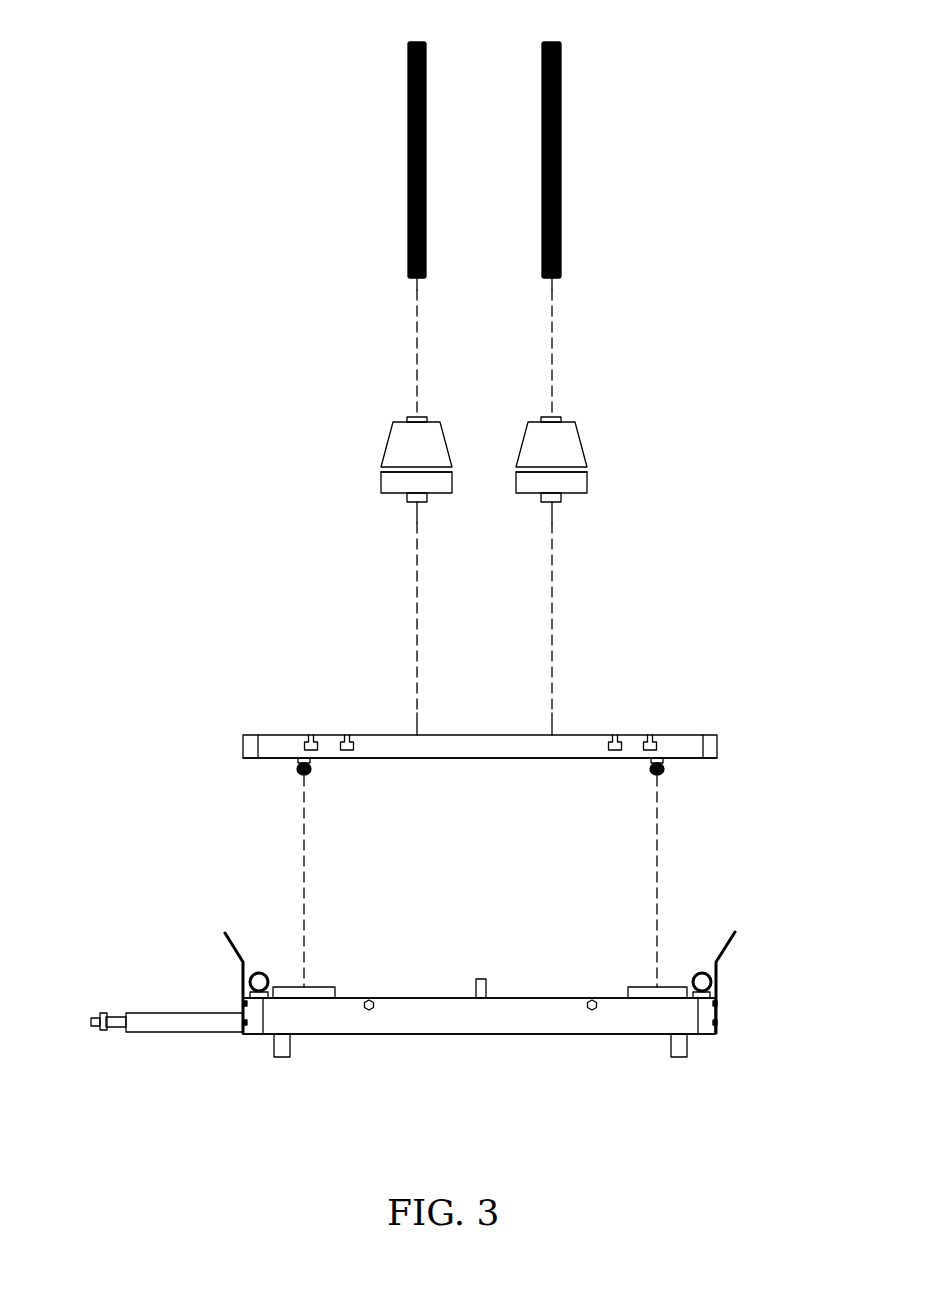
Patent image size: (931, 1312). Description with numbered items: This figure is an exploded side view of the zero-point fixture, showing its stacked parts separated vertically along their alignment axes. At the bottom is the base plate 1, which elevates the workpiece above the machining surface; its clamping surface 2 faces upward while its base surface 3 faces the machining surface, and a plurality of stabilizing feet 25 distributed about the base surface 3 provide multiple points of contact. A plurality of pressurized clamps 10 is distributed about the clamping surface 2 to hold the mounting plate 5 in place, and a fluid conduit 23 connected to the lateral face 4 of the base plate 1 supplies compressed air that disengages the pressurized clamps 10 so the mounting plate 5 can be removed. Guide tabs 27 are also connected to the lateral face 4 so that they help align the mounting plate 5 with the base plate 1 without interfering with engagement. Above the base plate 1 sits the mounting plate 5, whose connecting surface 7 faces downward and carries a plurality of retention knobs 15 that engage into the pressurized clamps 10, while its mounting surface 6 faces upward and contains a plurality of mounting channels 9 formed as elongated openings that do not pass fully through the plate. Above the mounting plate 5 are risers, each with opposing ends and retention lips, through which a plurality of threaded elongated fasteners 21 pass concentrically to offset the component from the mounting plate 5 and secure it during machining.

The base plate 1 is at (435, 994).
The clamping surface 2 is at (441, 998).
The base surface 3 is at (580, 1034).
The lateral face 4 is at (548, 1027).
The mounting plate 5 is at (457, 743).
The mounting surface 6 is at (483, 735).
The connecting surface 7 is at (414, 758).
The mounting channels 9 is at (311, 742).
The pressurized clamps 10 is at (329, 990).
The retention knobs 15 is at (297, 769).
The elongated fasteners 21 is at (421, 42).
The fluid conduit 23 is at (172, 1018).
The stabilizing feet 25 is at (290, 1052).
The guide tabs 27 is at (225, 933).